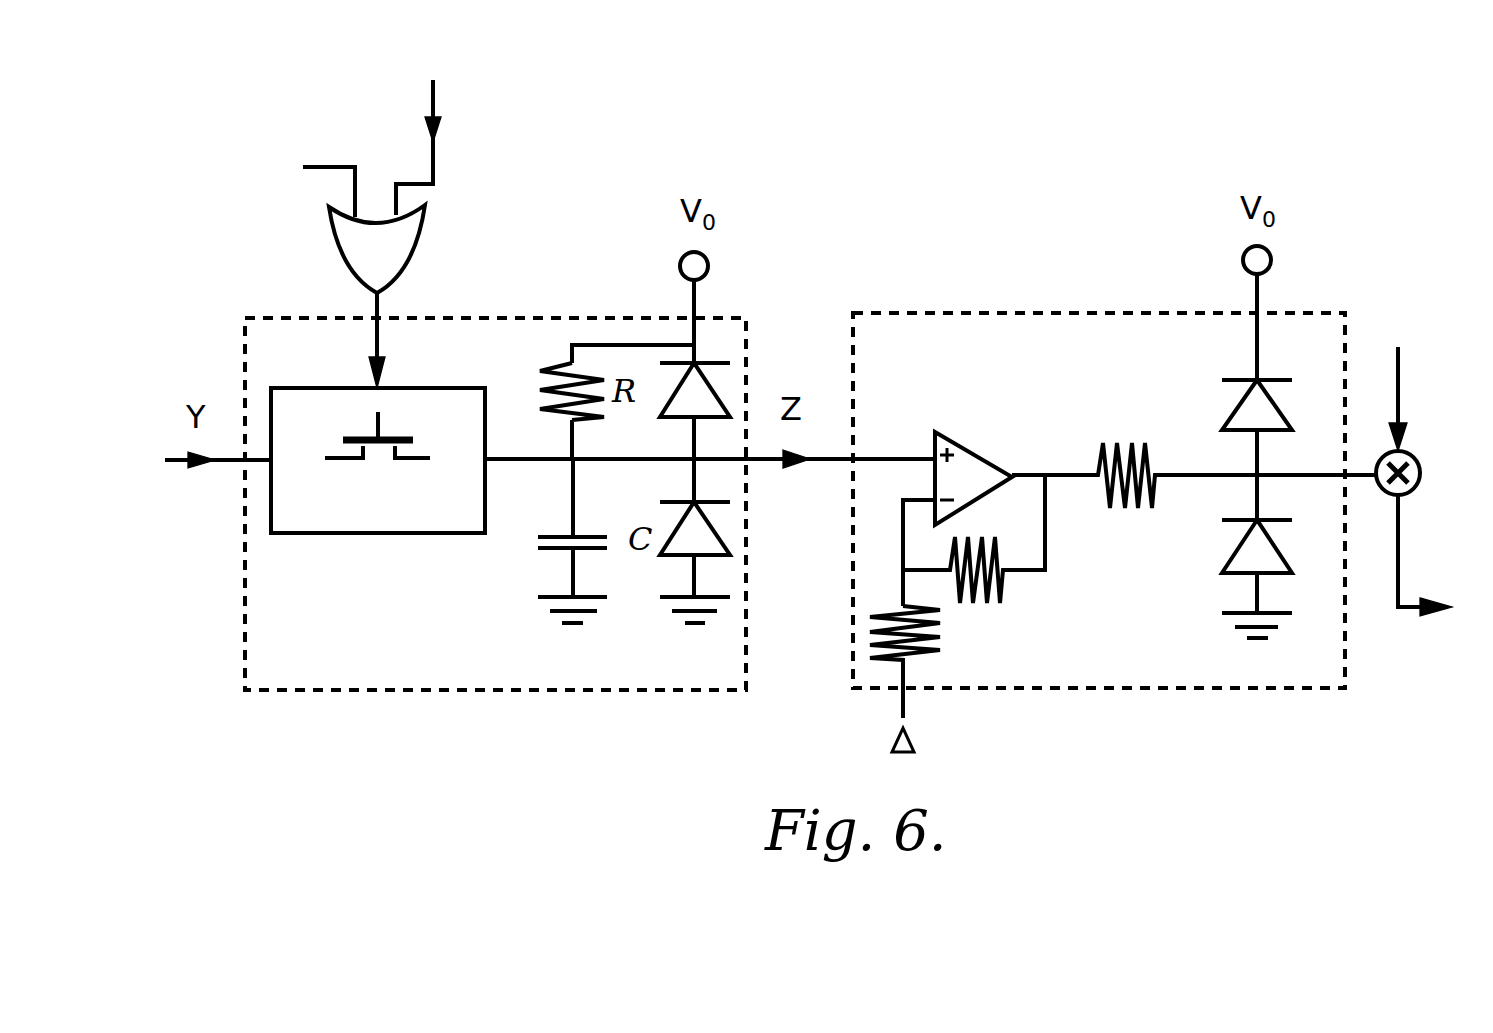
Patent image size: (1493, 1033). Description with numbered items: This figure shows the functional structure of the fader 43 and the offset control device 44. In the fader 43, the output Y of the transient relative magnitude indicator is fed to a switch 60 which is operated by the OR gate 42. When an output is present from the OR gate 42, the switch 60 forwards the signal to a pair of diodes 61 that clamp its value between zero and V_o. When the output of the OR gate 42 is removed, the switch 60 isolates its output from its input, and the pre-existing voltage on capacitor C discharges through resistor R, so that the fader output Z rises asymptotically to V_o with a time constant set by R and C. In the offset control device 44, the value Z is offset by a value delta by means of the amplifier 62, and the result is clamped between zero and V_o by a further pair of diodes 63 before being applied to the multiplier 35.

The OR gate 42 is at (378, 254).
The fader 43 is at (473, 313).
The offset control device 44 is at (1065, 313).
The switch 60 is at (377, 498).
The pair of diodes 61 is at (697, 535).
The amplifier 62 is at (968, 477).
The further pair of diodes 63 is at (1265, 555).
The multiplier 35 is at (1403, 497).